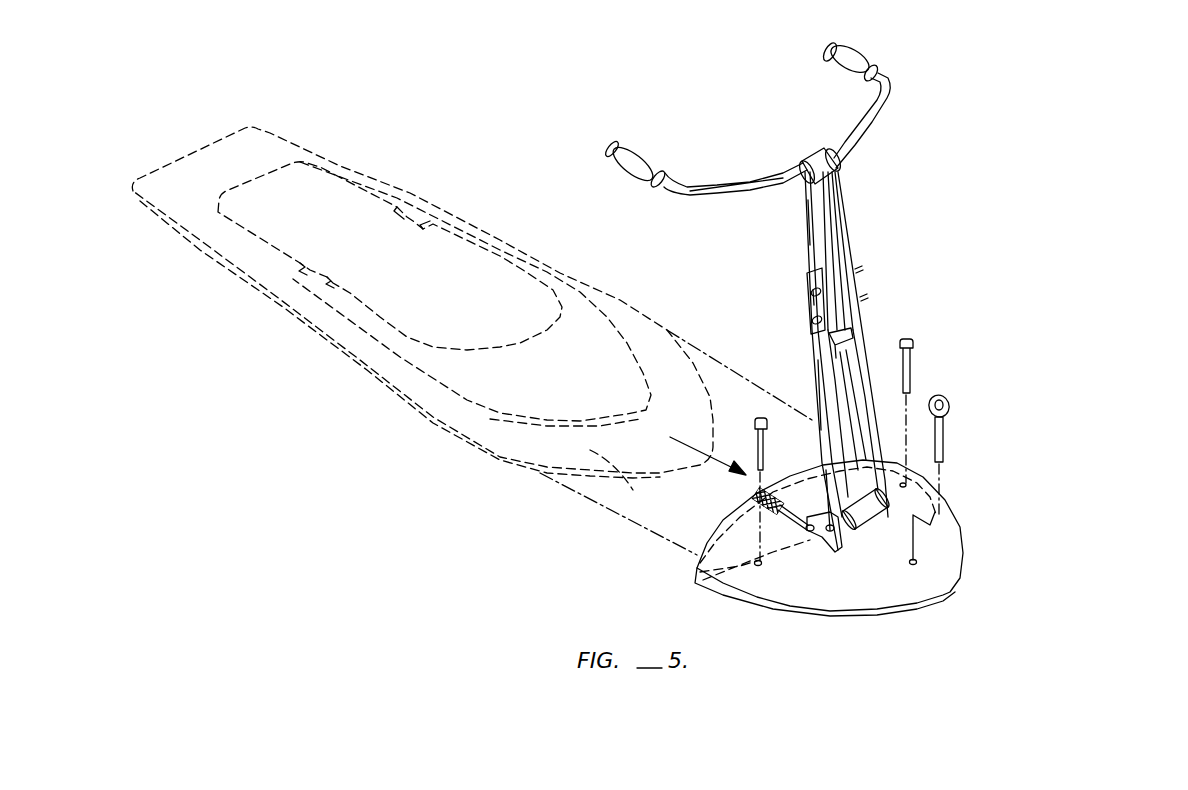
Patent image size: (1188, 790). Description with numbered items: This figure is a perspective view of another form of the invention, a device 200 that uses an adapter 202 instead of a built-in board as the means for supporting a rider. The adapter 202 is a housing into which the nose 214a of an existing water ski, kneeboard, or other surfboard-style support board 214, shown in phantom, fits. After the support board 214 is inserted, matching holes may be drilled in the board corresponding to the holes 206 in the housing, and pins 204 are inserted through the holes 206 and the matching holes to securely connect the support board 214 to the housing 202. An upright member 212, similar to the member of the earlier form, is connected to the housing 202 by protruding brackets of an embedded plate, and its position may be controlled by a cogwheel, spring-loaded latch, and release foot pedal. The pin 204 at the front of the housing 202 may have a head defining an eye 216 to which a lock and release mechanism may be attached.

The device 200 is at (1082, 230).
The adapter 202 is at (940, 560).
The pins 204 is at (762, 442).
The holes 206 is at (757, 566).
The member 212 is at (845, 246).
The support board 214 is at (281, 141).
The nose 214a is at (633, 491).
The eye 216 is at (945, 406).